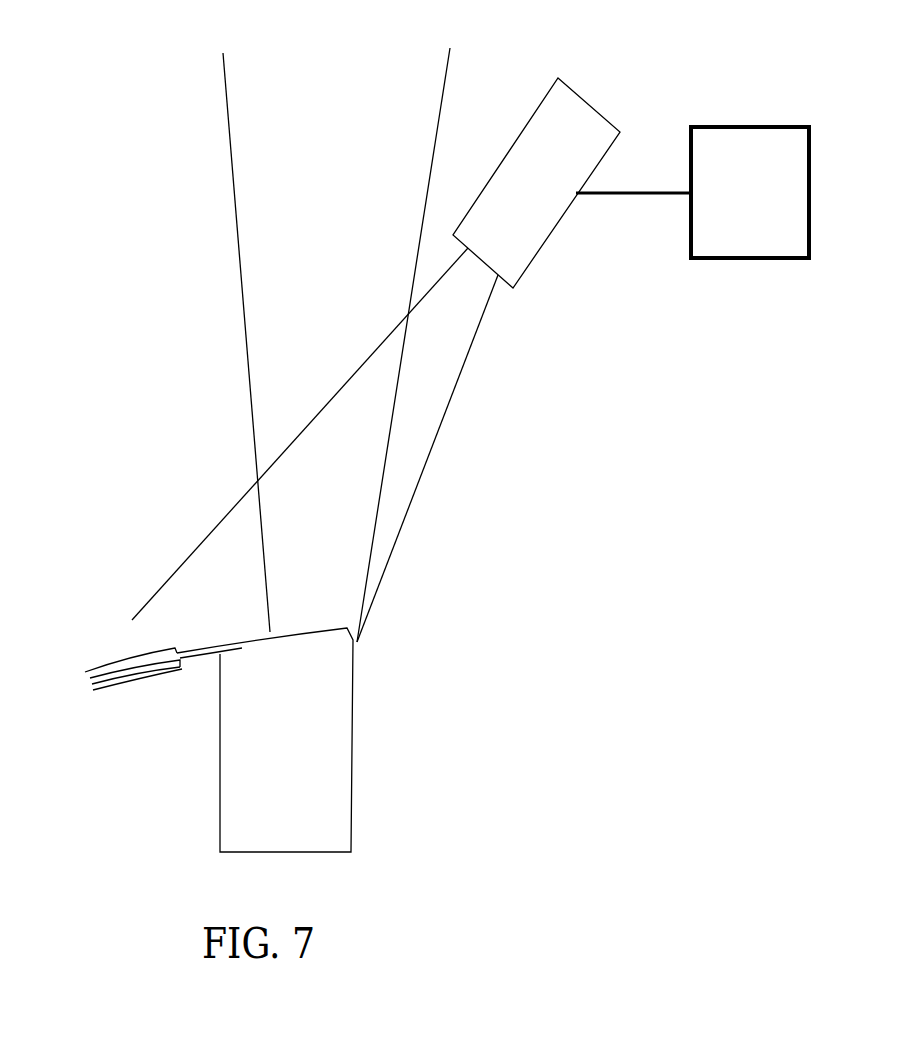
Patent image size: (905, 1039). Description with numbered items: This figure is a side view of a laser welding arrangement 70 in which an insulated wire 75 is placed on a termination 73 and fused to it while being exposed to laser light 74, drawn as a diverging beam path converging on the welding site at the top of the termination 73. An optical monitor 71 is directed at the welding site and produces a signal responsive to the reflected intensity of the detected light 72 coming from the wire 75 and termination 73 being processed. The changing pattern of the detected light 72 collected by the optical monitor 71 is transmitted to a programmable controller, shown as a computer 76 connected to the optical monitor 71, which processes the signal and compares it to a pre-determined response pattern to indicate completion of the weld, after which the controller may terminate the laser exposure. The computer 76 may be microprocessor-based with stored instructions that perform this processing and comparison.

The sensing system 70 is at (552, 650).
The optical monitor 71 is at (558, 243).
The detected light 72 is at (435, 297).
The termination 73 is at (355, 737).
The laser light 74 is at (427, 128).
The wire 75 is at (186, 674).
The computer 76 is at (692, 192).